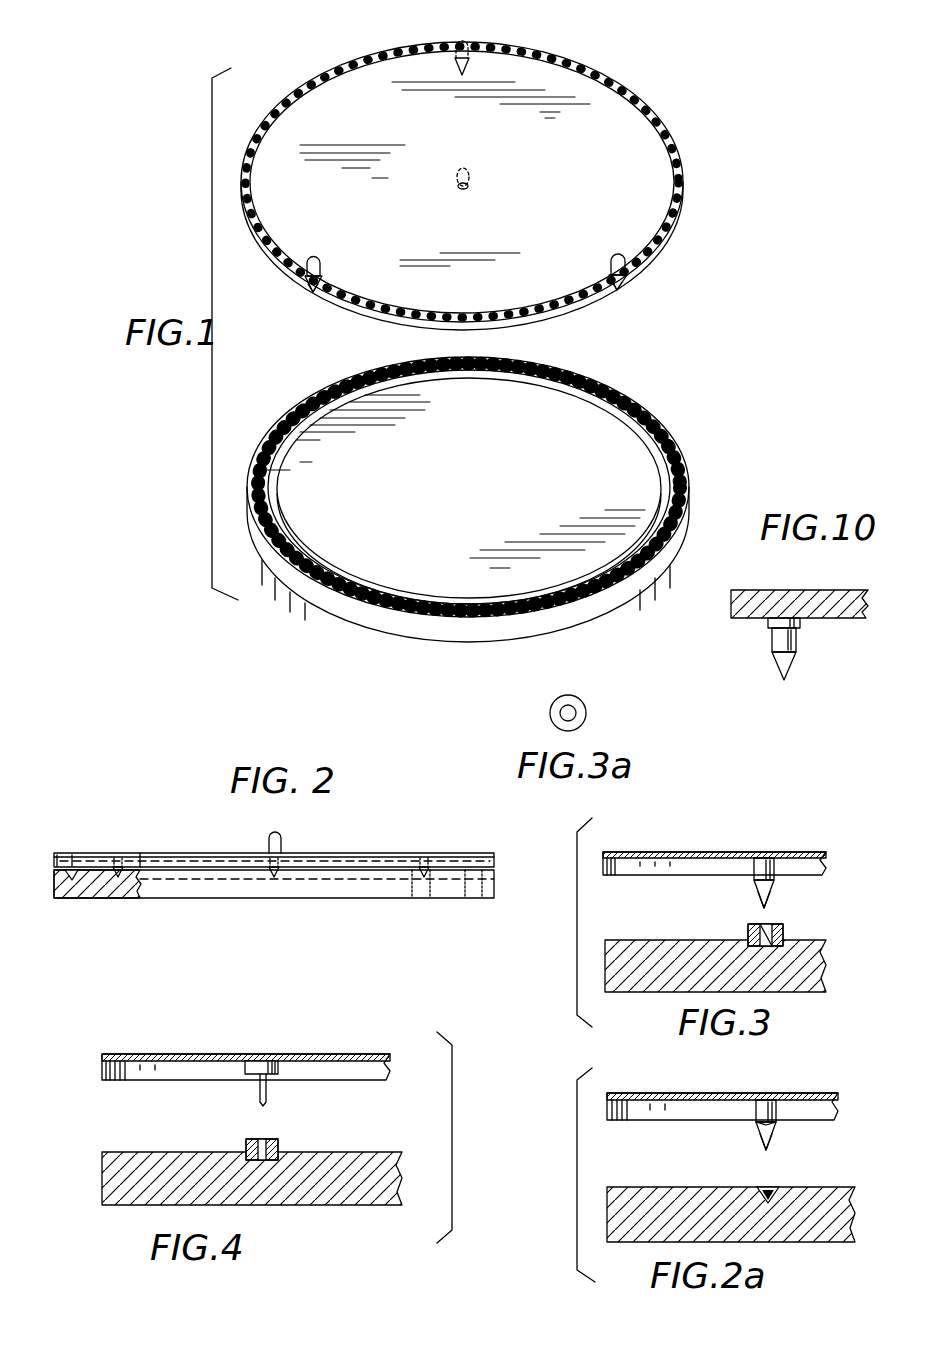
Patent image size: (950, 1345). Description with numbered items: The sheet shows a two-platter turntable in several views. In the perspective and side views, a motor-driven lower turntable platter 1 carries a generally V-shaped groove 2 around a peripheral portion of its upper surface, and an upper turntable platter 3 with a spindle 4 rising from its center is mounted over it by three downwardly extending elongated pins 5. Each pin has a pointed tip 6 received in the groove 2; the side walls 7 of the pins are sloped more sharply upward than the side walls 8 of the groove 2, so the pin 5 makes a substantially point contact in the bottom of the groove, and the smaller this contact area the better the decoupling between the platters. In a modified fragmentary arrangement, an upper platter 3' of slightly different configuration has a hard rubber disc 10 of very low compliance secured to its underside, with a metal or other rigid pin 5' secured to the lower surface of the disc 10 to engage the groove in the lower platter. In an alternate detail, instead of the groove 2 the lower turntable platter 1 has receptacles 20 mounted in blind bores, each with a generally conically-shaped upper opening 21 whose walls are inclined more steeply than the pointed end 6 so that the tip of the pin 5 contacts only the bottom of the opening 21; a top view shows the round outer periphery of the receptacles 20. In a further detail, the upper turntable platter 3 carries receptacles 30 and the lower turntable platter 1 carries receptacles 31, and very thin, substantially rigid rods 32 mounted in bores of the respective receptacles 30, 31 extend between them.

In FIG. 1, the lower turntable platter 1 is at (687, 473).
In FIG. 2, the lower turntable platter 1 is at (495, 897).
In FIG. 3, the lower turntable platter 1 is at (652, 945).
In FIG. 2A, the lower turntable platter 1 is at (650, 1195).
In FIG. 4, the lower turntable platter 1 is at (128, 1160).
In FIG. 1, the V-shaped groove 2 is at (644, 437).
In FIG. 2, the V-shaped groove 2 is at (63, 898).
In FIG. 2A, the V-shaped groove 2 is at (779, 1190).
In FIG. 1, the upper turntable platter 3 is at (472, 256).
In FIG. 2, the upper turntable platter 3 is at (274, 847).
In FIG. 3, the upper turntable platter 3 is at (714, 843).
In FIG. 2A, the upper turntable platter 3 is at (722, 1091).
In FIG. 4, the upper turntable platter 3 is at (246, 1047).
In FIG. 1, the spindle 4 is at (478, 175).
In FIG. 2, the spindle 4 is at (283, 844).
In FIG. 1, the elongated pins 5 is at (466, 156).
In FIG. 3, the elongated pins 5 is at (745, 883).
In FIG. 2A, the elongated pins 5 is at (766, 1106).
In FIG. 1, the pointed tips 6 is at (313, 291).
In FIG. 3, the pointed tips 6 is at (770, 905).
In FIG. 2A, the pointed tips 6 is at (765, 1148).
In FIG. 2A, the side walls of the pins 7 is at (757, 1125).
In FIG. 2A, the side walls of the groove 8 is at (765, 1190).
In FIG. 10, the hard rubber disc 10 is at (770, 623).
In FIG. 3A, the receptacles 20 is at (586, 720).
In FIG. 3, the receptacles 20 is at (782, 935).
In FIG. 3A, the conically-shaped upper opening 21 is at (571, 712).
In FIG. 3, the conically-shaped upper opening 21 is at (758, 925).
In FIG. 4, the receptacles 30 is at (283, 1061).
In FIG. 4, the receptacles 31 is at (283, 1146).
In FIG. 4, the thin rods 32 is at (258, 1090).
In FIG. 10, the upper platter 3' is at (799, 585).
In FIG. 10, the rigid pin 5' is at (804, 654).